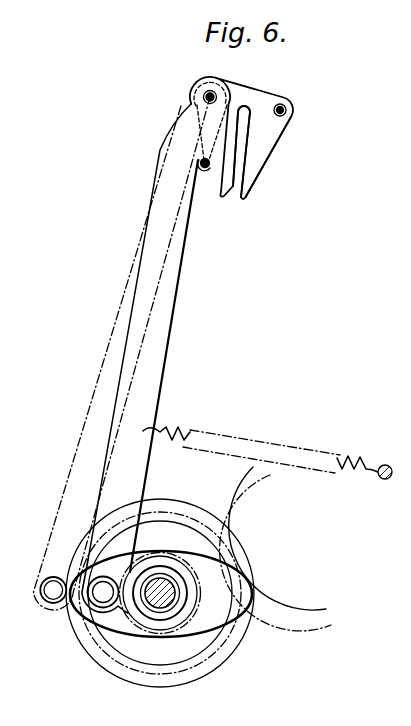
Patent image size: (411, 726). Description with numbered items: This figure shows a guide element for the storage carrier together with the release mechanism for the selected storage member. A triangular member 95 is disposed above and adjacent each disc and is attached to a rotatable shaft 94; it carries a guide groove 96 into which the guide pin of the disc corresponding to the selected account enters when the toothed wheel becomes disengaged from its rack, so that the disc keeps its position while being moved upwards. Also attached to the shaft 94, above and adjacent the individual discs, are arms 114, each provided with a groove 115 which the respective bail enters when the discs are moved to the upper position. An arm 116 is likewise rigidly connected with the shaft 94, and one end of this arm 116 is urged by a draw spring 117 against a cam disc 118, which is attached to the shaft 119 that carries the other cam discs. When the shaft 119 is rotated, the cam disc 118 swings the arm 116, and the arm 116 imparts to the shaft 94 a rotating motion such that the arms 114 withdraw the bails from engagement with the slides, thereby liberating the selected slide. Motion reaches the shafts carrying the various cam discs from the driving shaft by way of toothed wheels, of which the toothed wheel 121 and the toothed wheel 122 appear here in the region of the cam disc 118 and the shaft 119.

The shaft 94 is at (203, 97).
The arm 114 is at (205, 117).
The groove 115 is at (204, 156).
The triangular member 95 is at (272, 143).
The guide groove 96 is at (242, 163).
The arm 116 is at (146, 483).
The draw spring 117 is at (343, 458).
The cam disc 118 is at (212, 628).
The shaft 119 is at (157, 604).
The toothed wheel 121 is at (217, 670).
The toothed wheel 122 is at (318, 624).